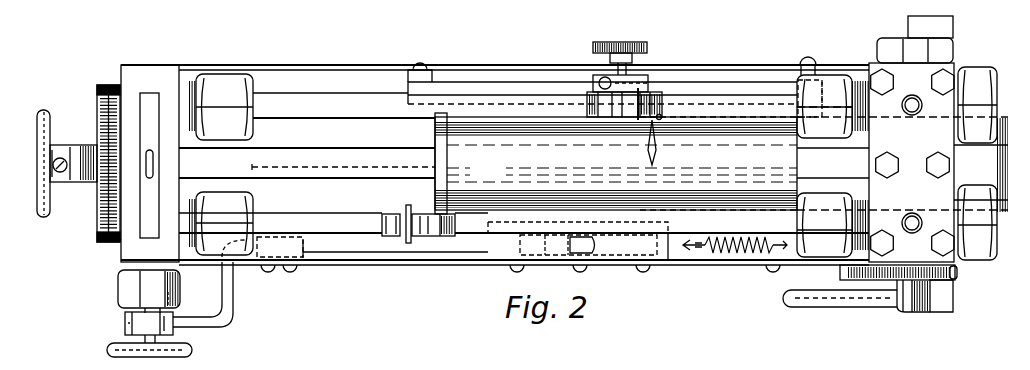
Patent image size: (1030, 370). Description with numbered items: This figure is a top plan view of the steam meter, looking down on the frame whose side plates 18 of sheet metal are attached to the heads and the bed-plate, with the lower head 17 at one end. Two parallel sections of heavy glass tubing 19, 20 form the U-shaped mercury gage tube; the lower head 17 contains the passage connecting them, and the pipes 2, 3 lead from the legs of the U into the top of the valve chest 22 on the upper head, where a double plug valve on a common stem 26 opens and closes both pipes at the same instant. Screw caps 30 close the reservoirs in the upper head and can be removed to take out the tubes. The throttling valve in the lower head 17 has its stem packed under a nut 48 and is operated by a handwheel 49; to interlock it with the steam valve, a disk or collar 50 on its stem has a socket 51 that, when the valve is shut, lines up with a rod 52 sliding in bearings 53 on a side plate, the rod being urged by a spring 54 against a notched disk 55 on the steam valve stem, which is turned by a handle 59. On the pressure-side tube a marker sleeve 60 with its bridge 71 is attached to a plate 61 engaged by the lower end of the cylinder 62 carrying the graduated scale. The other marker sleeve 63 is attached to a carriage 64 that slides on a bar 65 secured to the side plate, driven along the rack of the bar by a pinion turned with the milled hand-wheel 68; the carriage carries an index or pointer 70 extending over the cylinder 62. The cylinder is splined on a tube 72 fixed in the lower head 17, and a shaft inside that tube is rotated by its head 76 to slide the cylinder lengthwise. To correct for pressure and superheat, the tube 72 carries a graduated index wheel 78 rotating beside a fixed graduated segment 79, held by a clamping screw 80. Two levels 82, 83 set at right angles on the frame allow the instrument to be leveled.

The pipe 2 is at (914, 214).
The pipe 3 is at (915, 116).
The lower head 17 is at (125, 157).
The side plates 18 is at (330, 66).
The gage tube section 19 is at (319, 222).
The gage tube section 20 is at (333, 118).
The valve chest 22 is at (862, 184).
The stem 26 is at (895, 310).
The screw caps 30 is at (978, 138).
The nut 48 is at (126, 288).
The handwheel 49 is at (108, 351).
The disk or collar 50 is at (176, 330).
The socket 51 is at (170, 314).
The rod 52 is at (234, 297).
The bearings 53 is at (303, 262).
The spring 54 is at (711, 258).
The disk 55 is at (957, 272).
The handle 59 is at (791, 308).
The sleeve 60 is at (388, 214).
The plate 61 is at (432, 214).
The cylinder 62 is at (616, 163).
The sleeve 63 is at (592, 113).
The carriage 64 is at (594, 80).
The bar 65 is at (470, 82).
The milled hand-wheel 68 is at (648, 47).
The index or pointer 70 is at (658, 157).
The bridge 71 is at (408, 212).
The tube 72 is at (524, 163).
The head 76 is at (42, 219).
The graduated index wheel 78 is at (99, 240).
The fixed graduated segment 79 is at (116, 243).
The clamping screw 80 is at (89, 184).
The level 82 is at (617, 260).
The level 83 is at (148, 110).